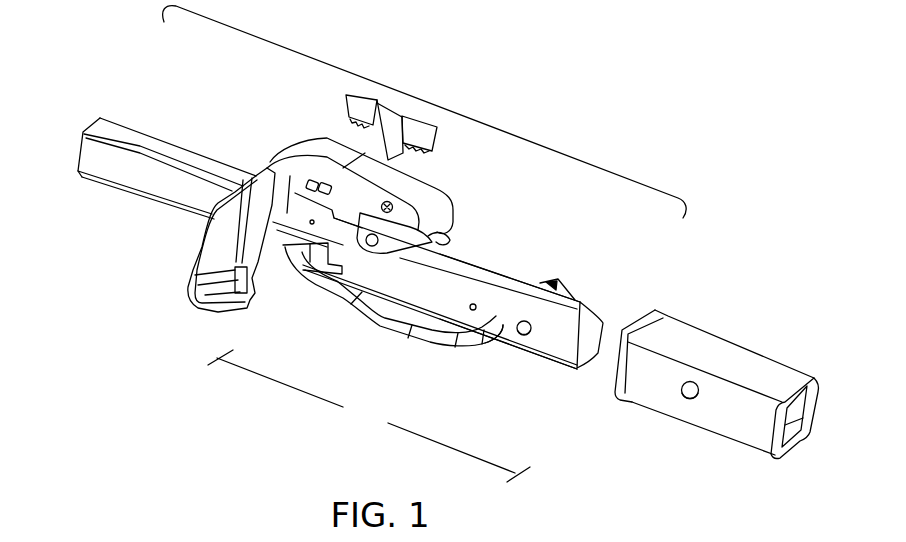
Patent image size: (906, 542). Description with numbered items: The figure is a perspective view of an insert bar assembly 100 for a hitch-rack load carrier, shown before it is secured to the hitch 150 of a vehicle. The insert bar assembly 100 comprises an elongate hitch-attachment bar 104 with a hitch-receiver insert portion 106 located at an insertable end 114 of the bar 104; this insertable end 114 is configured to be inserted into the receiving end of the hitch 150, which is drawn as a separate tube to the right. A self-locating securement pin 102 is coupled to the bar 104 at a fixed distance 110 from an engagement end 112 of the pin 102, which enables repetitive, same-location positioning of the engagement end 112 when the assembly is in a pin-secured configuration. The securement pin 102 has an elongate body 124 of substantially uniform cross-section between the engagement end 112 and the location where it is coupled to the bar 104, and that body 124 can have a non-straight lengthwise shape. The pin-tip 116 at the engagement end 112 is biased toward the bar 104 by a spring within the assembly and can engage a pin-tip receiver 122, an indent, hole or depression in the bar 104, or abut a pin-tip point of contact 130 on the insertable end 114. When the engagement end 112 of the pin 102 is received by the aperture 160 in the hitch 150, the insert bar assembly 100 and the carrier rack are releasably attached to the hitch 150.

The insert bar assembly 100 is at (560, 72).
The securement pin 102 is at (388, 338).
The elongate hitch-attachment bar 104 is at (430, 101).
The hitch-receiver insert portion 106 is at (455, 350).
The fixed distance 110 is at (369, 416).
The engagement end 112 is at (490, 354).
The insertable end 114 is at (563, 362).
The pin-tip 116 is at (529, 316).
The pin-tip receiver 122 is at (550, 285).
The elongate body 124 is at (362, 326).
The pin-tip point of contact 130 is at (524, 336).
The hitch 150 is at (717, 372).
The aperture 160 is at (690, 381).